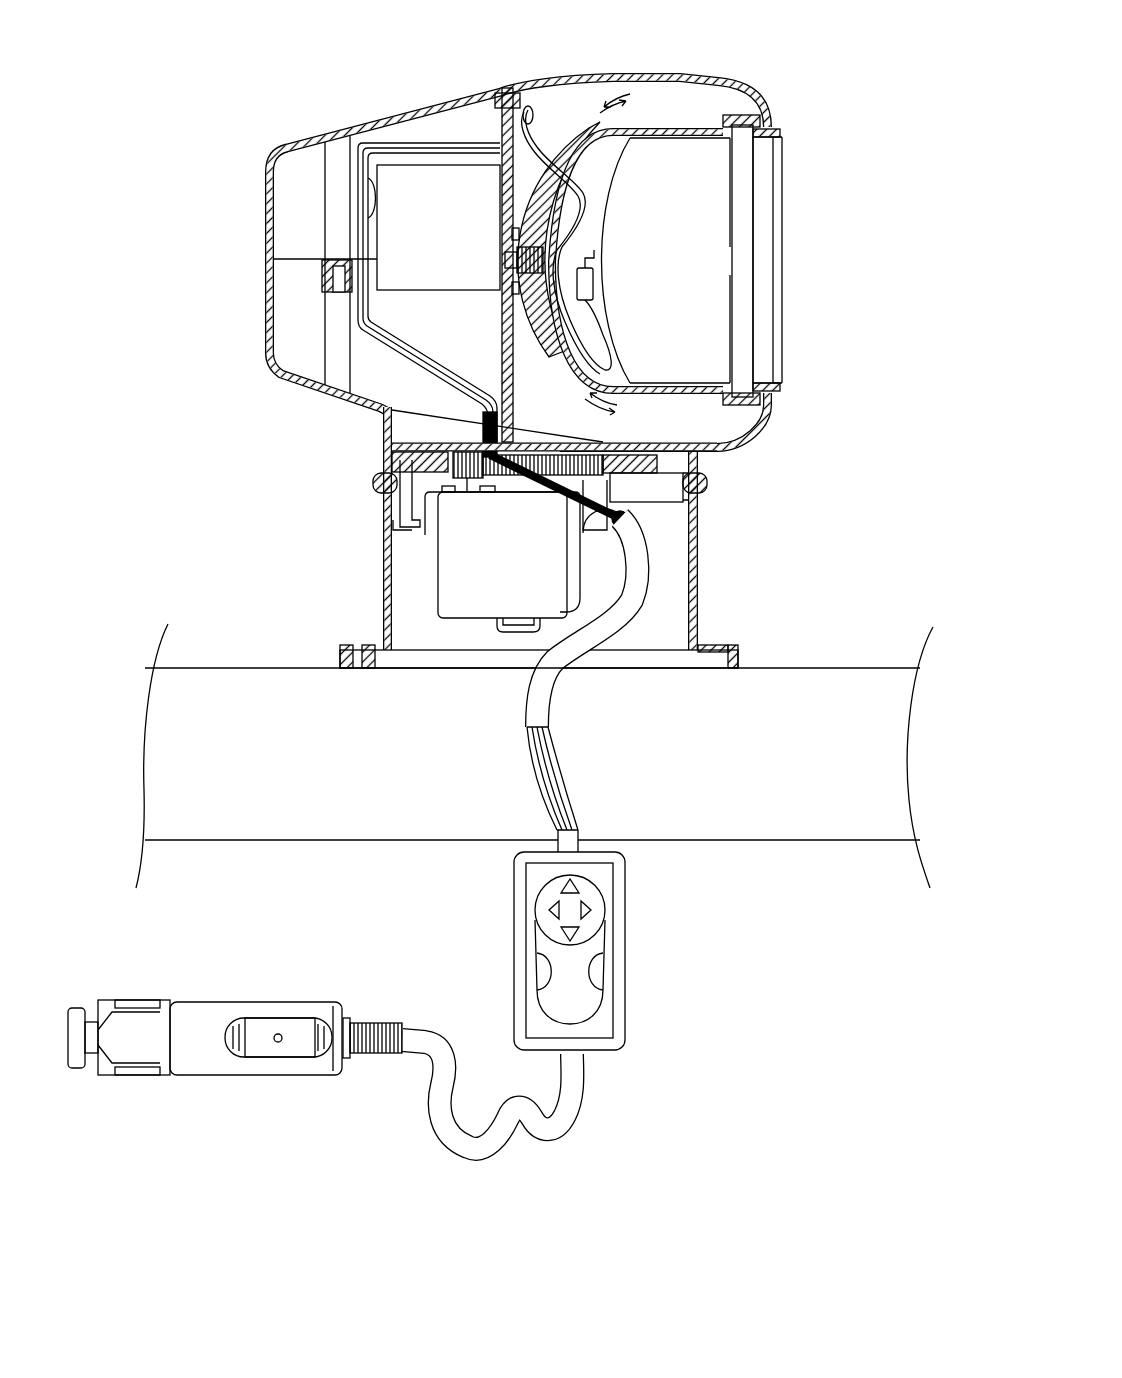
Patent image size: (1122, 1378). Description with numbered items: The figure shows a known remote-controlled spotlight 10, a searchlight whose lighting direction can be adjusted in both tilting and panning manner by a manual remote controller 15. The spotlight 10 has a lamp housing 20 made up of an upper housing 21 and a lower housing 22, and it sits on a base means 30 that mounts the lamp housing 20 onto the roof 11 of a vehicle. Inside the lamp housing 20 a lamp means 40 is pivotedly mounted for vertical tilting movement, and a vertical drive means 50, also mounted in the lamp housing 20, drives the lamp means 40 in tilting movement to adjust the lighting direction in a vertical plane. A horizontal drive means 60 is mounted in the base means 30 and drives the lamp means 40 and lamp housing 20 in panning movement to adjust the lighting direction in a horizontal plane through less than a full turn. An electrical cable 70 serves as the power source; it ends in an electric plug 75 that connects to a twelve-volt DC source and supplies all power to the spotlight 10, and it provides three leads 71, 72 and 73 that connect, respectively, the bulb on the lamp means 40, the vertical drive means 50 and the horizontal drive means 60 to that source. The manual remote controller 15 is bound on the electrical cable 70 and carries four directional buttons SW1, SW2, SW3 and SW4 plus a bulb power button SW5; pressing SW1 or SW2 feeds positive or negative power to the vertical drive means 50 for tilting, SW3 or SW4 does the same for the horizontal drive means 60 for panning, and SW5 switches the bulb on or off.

The remote-controlled spotlight 10 is at (307, 30).
The roof 11 is at (203, 738).
The manual remote controller 15 is at (516, 940).
The lamp housing 20 is at (186, 210).
The upper housing 21 is at (265, 215).
The lower housing 22 is at (265, 300).
The base means 30 is at (700, 583).
The lamp means 40 is at (668, 266).
The vertical drive means 50 is at (448, 246).
The horizontal drive means 60 is at (510, 576).
The electrical cable 70 is at (617, 617).
The leads 71 is at (533, 92).
The leads 72 is at (373, 217).
The leads 73 is at (515, 636).
The electric plug 75 is at (214, 1017).
The directional controlled button SW1 is at (562, 886).
The directional controlled button SW2 is at (577, 934).
The directional controlled button SW3 is at (543, 909).
The directional controlled button SW4 is at (598, 909).
The bulb power button SW5 is at (540, 972).